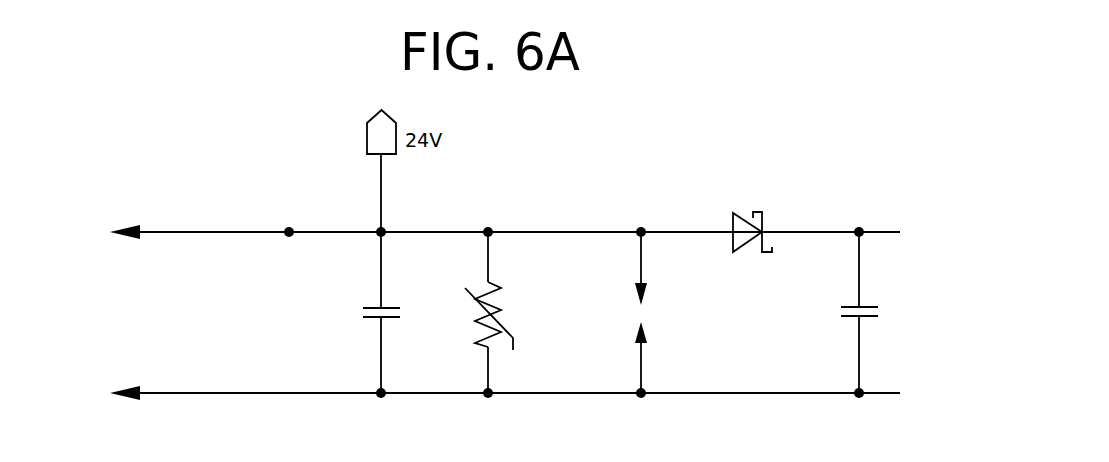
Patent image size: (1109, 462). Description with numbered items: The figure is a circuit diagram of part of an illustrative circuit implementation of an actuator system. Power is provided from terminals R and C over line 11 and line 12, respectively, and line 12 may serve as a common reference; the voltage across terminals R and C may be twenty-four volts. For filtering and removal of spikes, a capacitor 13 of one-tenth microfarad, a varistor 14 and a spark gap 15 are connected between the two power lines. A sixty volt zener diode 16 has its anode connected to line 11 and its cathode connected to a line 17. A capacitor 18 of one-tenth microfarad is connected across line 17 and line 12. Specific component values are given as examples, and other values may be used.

The line 11 is at (190, 232).
The line 12 is at (190, 393).
The capacitor 13 is at (392, 307).
The varistor 14 is at (475, 308).
The spark gap 15 is at (645, 310).
The zener diode 16 is at (765, 222).
The line 17 is at (893, 232).
The capacitor 18 is at (870, 306).